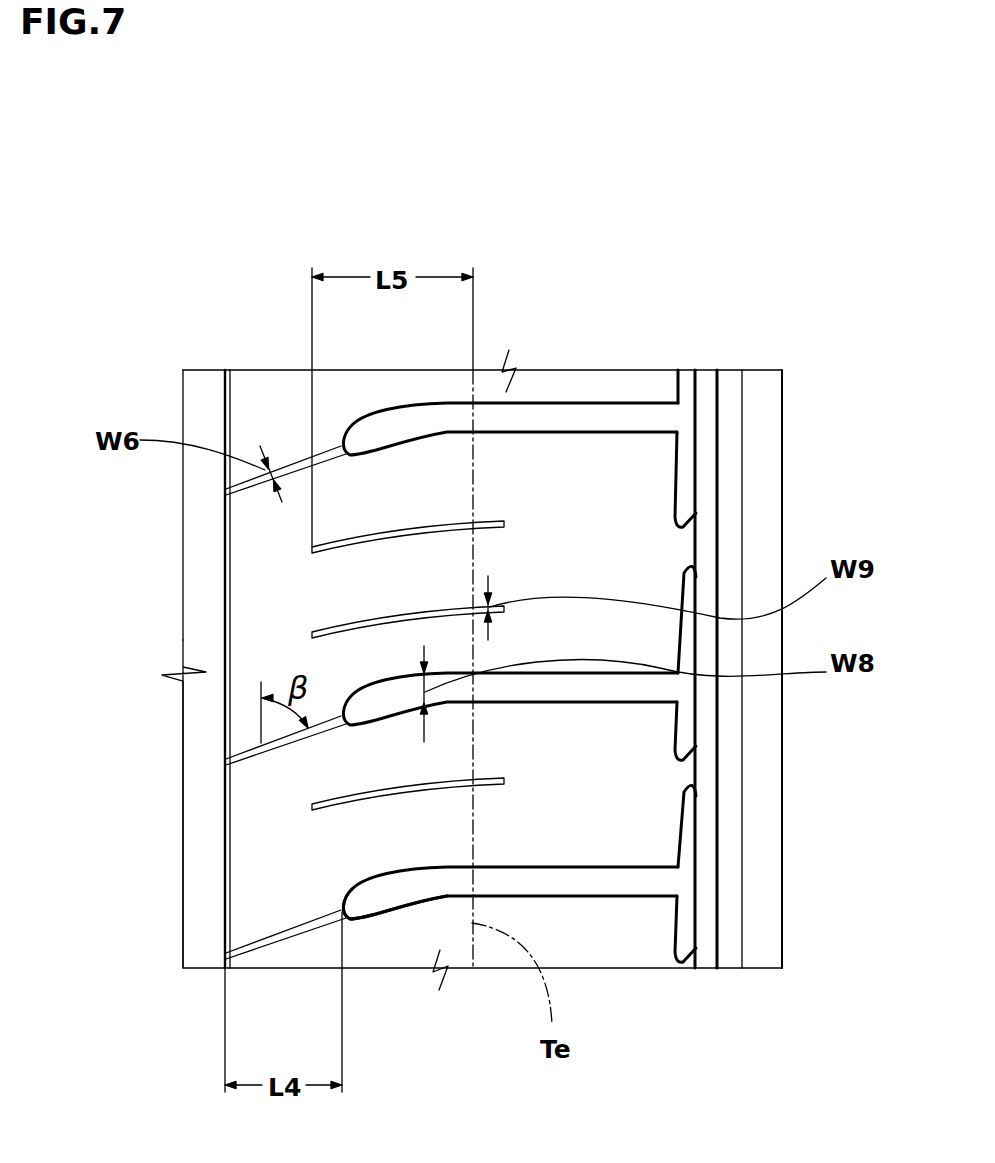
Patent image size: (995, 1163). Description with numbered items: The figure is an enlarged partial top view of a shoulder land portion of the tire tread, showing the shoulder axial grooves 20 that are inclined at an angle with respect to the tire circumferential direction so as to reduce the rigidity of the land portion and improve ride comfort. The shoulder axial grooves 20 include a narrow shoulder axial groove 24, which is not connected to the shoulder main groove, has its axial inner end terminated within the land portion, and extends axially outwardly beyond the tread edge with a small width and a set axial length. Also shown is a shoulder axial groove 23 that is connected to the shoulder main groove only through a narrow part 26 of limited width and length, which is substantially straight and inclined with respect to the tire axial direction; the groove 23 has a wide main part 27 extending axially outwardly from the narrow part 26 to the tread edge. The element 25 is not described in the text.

The shoulder axial groove 20 is at (97, 772).
The shoulder axial groove 23 is at (572, 415).
The narrow shoulder axial groove 24 is at (335, 628).
The groove 25 is at (185, 955).
The narrow part 26 is at (278, 935).
The wide main part 27 is at (410, 882).